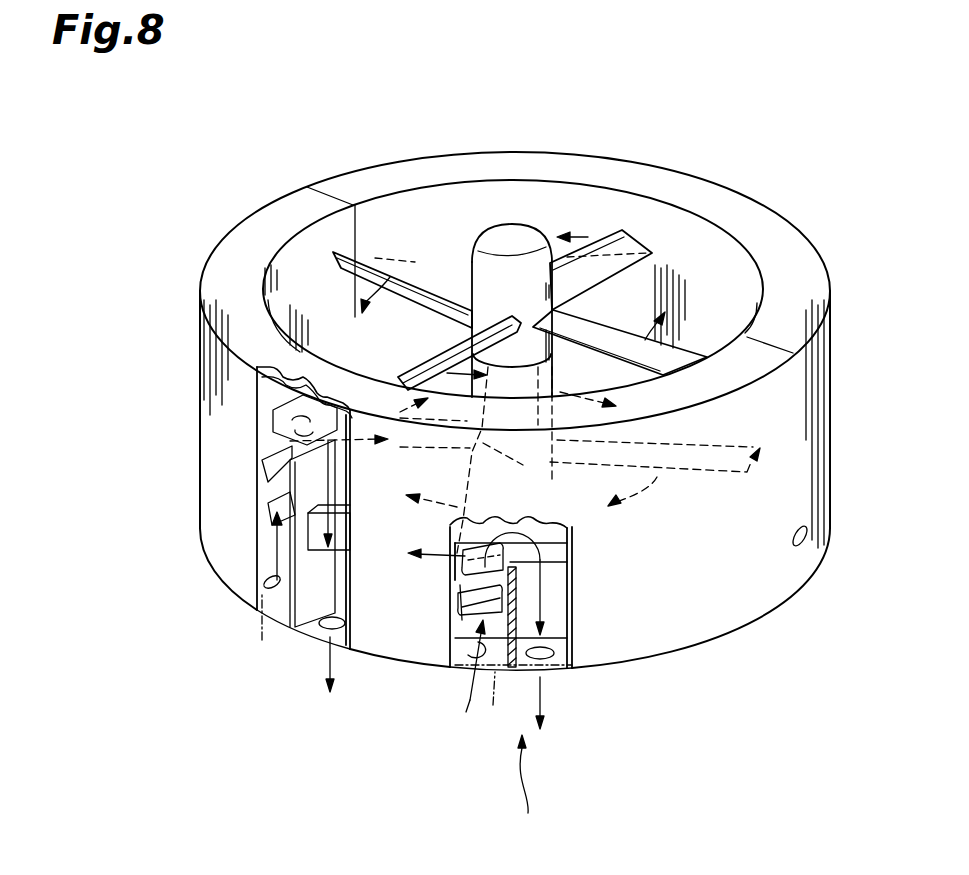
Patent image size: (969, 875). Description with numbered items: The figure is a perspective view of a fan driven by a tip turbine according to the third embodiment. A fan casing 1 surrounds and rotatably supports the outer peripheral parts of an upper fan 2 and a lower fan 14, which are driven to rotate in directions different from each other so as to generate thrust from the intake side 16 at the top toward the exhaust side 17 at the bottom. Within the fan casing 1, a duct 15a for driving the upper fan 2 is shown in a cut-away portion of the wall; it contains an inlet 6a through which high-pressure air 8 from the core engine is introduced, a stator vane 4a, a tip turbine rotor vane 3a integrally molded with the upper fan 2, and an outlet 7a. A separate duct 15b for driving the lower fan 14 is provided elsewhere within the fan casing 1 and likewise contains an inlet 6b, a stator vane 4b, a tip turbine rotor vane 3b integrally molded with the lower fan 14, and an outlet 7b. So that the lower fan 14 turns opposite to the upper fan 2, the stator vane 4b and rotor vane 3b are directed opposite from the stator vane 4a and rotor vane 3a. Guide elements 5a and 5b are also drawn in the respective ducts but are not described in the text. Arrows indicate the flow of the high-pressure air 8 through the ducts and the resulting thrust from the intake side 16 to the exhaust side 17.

The fan casing 1 is at (686, 623).
The upper fan 2 is at (413, 273).
The tip turbine rotor vane 3a is at (305, 429).
The tip turbine rotor vane 3b is at (452, 562).
The stator vane 4a is at (283, 480).
The stator vane 4b is at (467, 602).
The first guide plate 5a is at (312, 600).
The second guide plate 5b is at (517, 598).
The inlet 6a is at (795, 533).
The inlet 6b is at (513, 703).
The outlet 7a is at (333, 632).
The outlet 7b is at (547, 662).
The high-pressure air 8 is at (232, 613).
The lower fan 14 is at (728, 457).
The duct 15a is at (267, 547).
The duct 15b is at (465, 587).
The intake side 16 is at (548, 210).
The exhaust side 17 is at (521, 788).